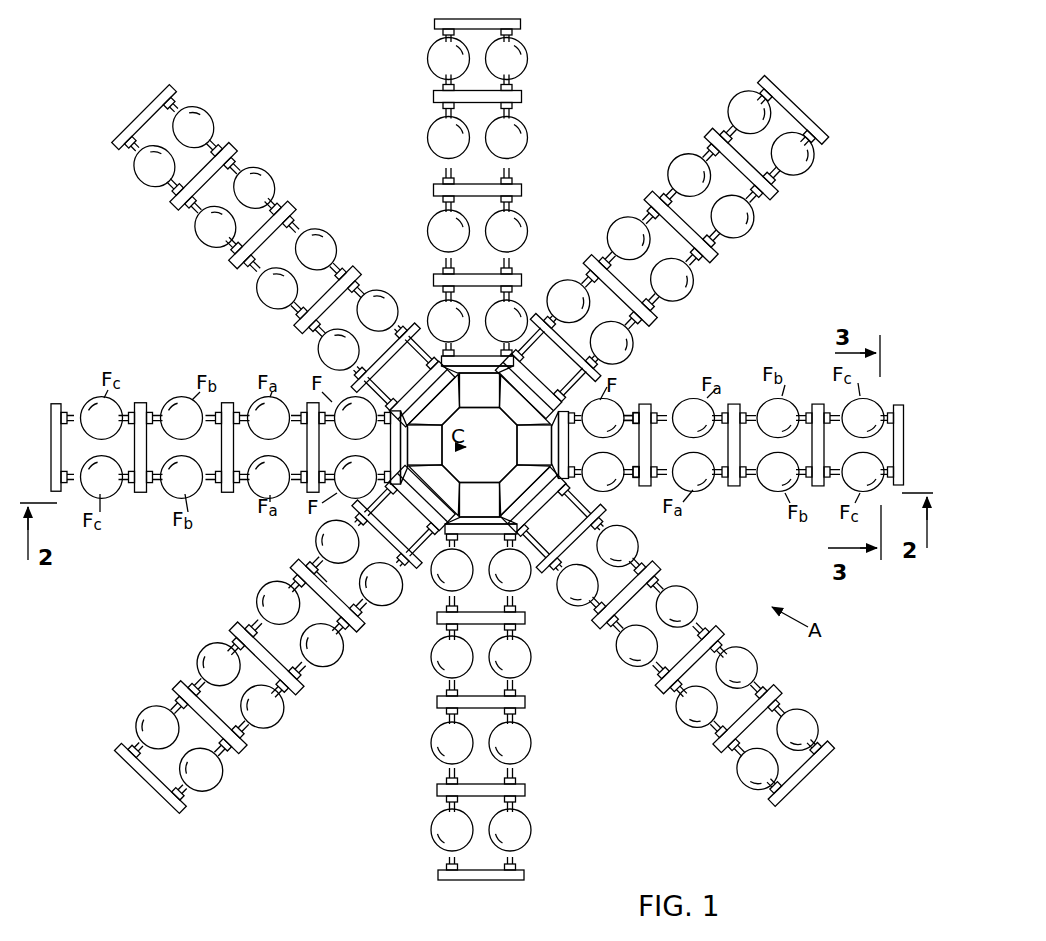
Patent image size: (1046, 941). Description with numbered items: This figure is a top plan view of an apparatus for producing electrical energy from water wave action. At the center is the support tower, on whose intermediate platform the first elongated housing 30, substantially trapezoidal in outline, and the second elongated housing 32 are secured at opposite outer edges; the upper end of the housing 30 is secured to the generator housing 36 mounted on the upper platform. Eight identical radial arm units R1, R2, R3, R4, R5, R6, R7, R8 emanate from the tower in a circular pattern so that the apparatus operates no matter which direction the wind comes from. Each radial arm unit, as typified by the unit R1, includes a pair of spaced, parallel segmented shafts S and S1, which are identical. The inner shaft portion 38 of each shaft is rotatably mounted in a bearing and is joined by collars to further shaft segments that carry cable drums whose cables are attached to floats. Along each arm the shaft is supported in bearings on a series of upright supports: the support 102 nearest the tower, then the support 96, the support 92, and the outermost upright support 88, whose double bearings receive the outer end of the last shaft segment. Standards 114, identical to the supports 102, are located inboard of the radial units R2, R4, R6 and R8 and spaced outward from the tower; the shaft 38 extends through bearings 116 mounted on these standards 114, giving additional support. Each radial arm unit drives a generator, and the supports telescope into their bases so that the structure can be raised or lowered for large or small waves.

The first elongated housing 30 is at (550, 440).
The second elongated housing 32 is at (395, 437).
The generator housing 36 is at (527, 452).
The shaft portion 38 is at (660, 413).
The upright support 88 is at (178, 92).
The upright support 92 is at (237, 147).
The upright support 96 is at (297, 207).
The upright support 102 is at (370, 265).
The standard 114 is at (408, 340).
The bearing 116 is at (340, 352).
The radial arm unit R1 is at (764, 500).
The radial arm unit R2 is at (704, 281).
The radial arm unit R3 is at (535, 134).
The radial arm unit R4 is at (282, 185).
The radial arm unit R5 is at (158, 397).
The radial arm unit R6 is at (233, 625).
The radial arm unit R7 is at (422, 720).
The radial arm unit R8 is at (670, 719).
The segmented shaft S1 is at (630, 413).
The segmented shaft S is at (630, 480).